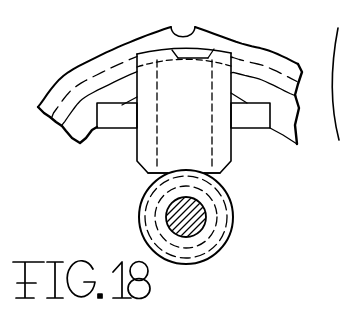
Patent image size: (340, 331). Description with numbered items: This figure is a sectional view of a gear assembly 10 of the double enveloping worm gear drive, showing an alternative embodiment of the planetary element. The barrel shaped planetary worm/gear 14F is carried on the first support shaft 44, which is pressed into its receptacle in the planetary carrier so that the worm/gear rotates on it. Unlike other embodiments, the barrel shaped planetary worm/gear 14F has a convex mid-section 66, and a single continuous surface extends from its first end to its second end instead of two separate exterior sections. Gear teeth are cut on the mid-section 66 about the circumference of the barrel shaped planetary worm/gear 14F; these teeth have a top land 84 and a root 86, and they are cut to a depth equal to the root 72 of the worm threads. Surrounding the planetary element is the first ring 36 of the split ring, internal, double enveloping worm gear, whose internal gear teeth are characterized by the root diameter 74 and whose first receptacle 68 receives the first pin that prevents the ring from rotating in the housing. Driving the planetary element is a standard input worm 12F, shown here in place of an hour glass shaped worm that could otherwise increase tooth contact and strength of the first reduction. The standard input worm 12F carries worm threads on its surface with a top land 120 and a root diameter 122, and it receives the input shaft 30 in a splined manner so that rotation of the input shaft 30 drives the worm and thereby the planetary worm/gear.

The wheel rim assembly 10 is at (51, 85).
The first ring 36 is at (93, 69).
The root diameter 74 is at (142, 54).
The first receptacle 68 is at (181, 33).
The top land 84 is at (190, 50).
The root 86 is at (216, 50).
The first support shaft 44 is at (113, 123).
The root of the worm threads 72 is at (256, 112).
The barrel shaped planetary worm/gear 14F is at (145, 148).
The mid-section 66 is at (156, 177).
The top land 120 is at (233, 220).
The standard input worm 12F is at (156, 220).
The root diameter 122 is at (217, 232).
The input shaft 30 is at (189, 223).